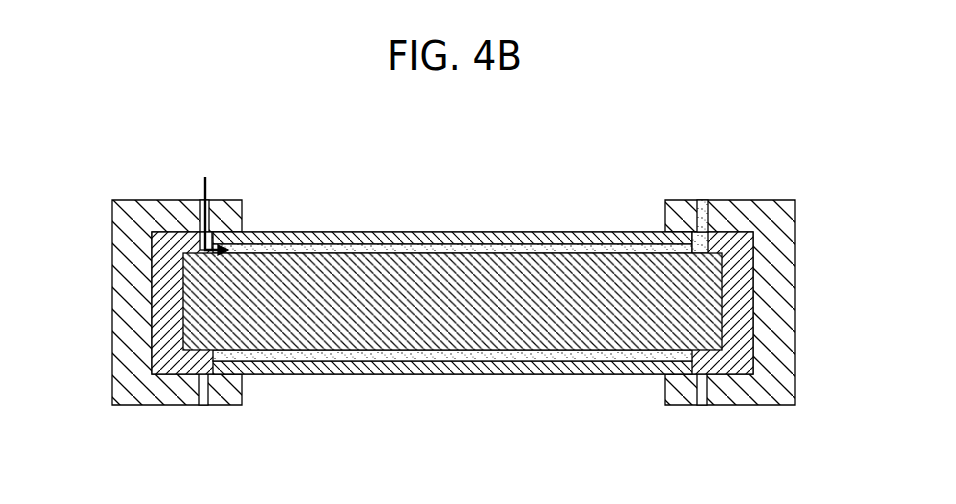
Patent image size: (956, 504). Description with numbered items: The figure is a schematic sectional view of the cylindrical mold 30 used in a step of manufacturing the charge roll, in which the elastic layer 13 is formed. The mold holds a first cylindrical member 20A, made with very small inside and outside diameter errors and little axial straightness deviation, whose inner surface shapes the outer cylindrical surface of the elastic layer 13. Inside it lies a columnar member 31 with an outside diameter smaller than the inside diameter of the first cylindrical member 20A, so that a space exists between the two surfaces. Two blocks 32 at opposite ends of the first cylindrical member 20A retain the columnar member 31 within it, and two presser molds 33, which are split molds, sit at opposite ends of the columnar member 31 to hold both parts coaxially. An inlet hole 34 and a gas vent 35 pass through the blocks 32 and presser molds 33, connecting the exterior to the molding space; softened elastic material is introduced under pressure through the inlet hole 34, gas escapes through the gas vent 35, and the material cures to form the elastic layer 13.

The cylindrical mold 30 is at (298, 124).
The elastic layer 13 is at (533, 240).
The first cylindrical member 20A is at (455, 248).
The columnar member 31 is at (387, 262).
The block 32 is at (742, 255).
The presser mold 33 is at (128, 293).
The inlet hole 34 is at (203, 182).
The gas vent 35 is at (700, 200).